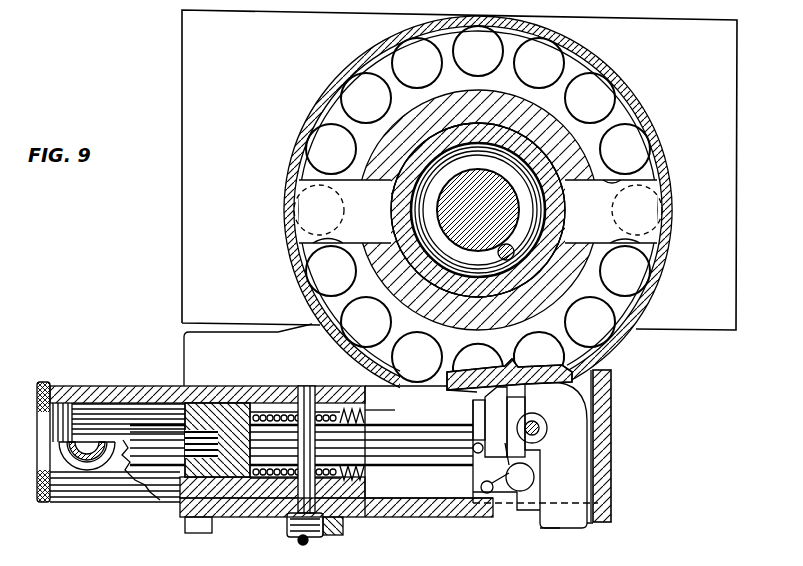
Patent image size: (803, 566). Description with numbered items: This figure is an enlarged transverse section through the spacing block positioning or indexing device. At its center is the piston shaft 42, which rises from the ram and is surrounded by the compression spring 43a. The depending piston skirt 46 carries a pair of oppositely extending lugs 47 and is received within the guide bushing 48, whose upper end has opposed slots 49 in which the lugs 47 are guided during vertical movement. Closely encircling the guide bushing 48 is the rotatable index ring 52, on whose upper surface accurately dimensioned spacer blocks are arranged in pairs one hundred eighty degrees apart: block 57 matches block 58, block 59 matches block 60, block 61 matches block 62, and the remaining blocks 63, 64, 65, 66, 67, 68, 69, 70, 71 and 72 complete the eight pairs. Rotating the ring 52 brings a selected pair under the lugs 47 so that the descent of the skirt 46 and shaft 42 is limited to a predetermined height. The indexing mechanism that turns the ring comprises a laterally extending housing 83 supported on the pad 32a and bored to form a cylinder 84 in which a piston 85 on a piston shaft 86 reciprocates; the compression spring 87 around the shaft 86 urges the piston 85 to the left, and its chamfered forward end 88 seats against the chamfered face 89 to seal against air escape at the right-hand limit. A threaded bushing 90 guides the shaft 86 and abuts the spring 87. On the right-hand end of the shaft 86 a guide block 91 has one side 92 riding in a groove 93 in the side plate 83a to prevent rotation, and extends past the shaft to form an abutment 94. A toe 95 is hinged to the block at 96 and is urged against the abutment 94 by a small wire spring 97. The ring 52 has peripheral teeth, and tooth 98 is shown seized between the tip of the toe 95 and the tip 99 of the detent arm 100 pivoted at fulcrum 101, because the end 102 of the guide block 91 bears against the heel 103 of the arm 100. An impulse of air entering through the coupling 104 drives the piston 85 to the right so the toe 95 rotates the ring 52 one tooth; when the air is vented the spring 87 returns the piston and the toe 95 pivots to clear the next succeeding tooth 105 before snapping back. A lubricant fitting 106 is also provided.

The pad 32a is at (195, 356).
The piston shaft 42 is at (460, 216).
The compression spring 43a is at (527, 197).
The piston skirt 46 is at (412, 190).
The lugs 47 is at (297, 193).
The guide bushing 48 is at (575, 148).
The opposed slots 49 is at (357, 166).
The rotatable index ring 52 is at (622, 312).
The spacer block 57 is at (297, 216).
The spacer block 58 is at (660, 205).
The spacer block 59 is at (331, 149).
The spacer block 60 is at (625, 271).
The spacer block 61 is at (366, 98).
The spacer block 62 is at (590, 322).
The spacer block 63 is at (417, 63).
The spacer block 64 is at (539, 349).
The spacer block 65 is at (478, 51).
The spacer block 66 is at (478, 358).
The spacer block 67 is at (539, 63).
The spacer block 68 is at (417, 357).
The spacer block 69 is at (590, 98).
The spacer block 70 is at (366, 322).
The spacer block 71 is at (625, 149).
The spacer block 72 is at (331, 271).
The housing 83 is at (103, 497).
The side plate 83a is at (437, 517).
The cylinder 84 is at (177, 453).
The piston 85 is at (223, 475).
The piston shaft 86 is at (418, 470).
The compression spring 87 is at (290, 410).
The chamfered forward end 88 is at (243, 405).
The chamfered face 89 is at (255, 405).
The threaded bushing 90 is at (367, 416).
The guide block 91 is at (487, 500).
The side of guide block 92 is at (480, 515).
The groove 93 is at (390, 507).
The abutment 94 is at (470, 435).
The toe 95 is at (493, 402).
The hinge point 96 is at (476, 455).
The wire spring 97 is at (482, 488).
The tooth 98 is at (500, 372).
The tip of detent arm 99 is at (560, 382).
The detent arm 100 is at (590, 468).
The fulcrum 101 is at (547, 428).
The end of guide plate 102 is at (527, 500).
The heel 103 is at (562, 497).
The coupling 104 is at (72, 452).
The next succeeding tooth 105 is at (470, 384).
The lubricant fitting 106 is at (303, 540).